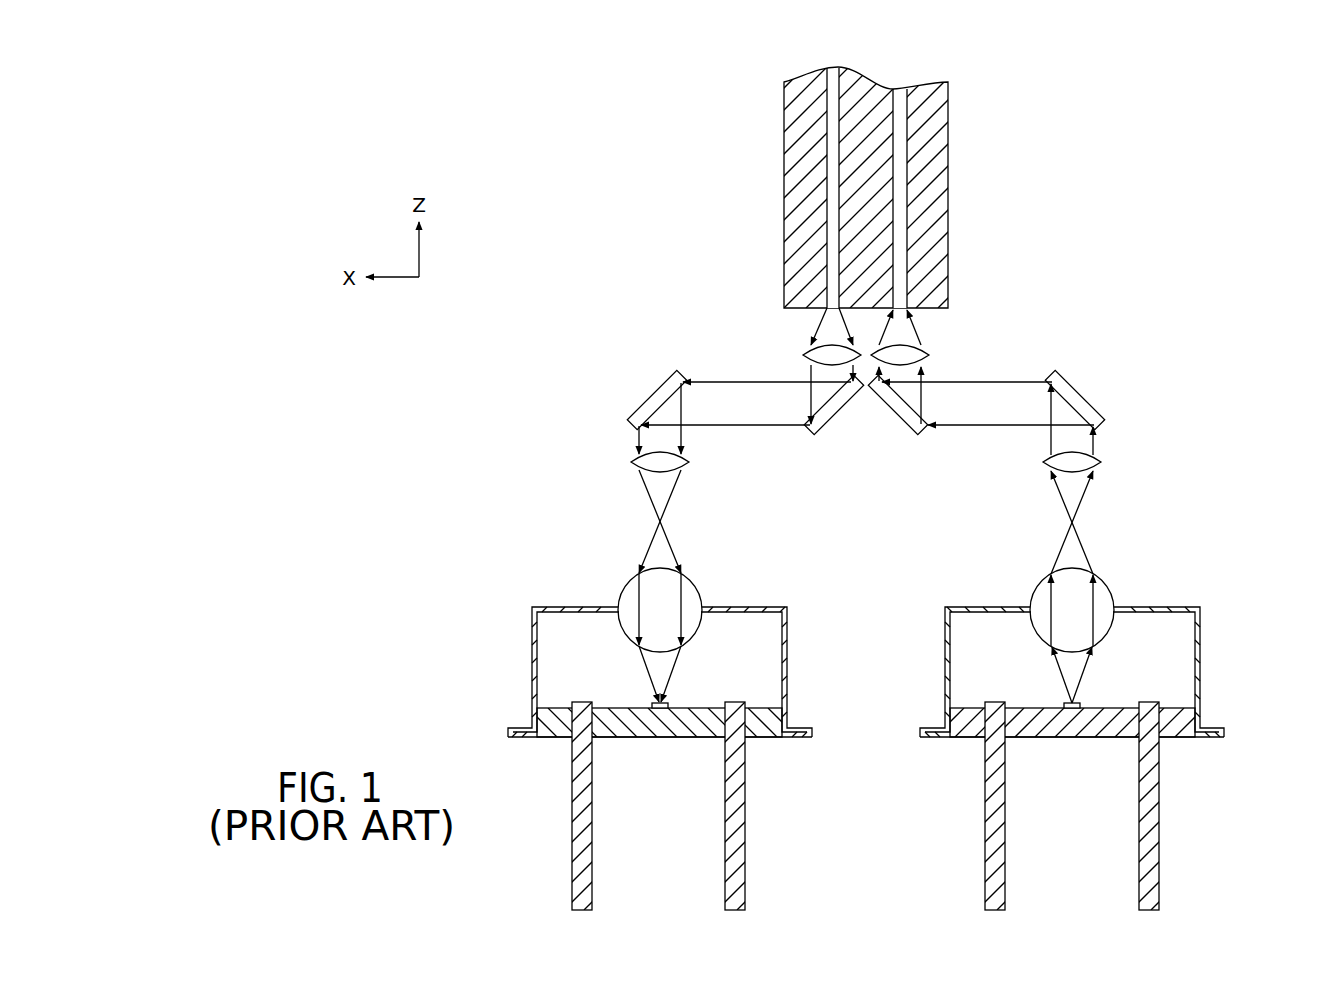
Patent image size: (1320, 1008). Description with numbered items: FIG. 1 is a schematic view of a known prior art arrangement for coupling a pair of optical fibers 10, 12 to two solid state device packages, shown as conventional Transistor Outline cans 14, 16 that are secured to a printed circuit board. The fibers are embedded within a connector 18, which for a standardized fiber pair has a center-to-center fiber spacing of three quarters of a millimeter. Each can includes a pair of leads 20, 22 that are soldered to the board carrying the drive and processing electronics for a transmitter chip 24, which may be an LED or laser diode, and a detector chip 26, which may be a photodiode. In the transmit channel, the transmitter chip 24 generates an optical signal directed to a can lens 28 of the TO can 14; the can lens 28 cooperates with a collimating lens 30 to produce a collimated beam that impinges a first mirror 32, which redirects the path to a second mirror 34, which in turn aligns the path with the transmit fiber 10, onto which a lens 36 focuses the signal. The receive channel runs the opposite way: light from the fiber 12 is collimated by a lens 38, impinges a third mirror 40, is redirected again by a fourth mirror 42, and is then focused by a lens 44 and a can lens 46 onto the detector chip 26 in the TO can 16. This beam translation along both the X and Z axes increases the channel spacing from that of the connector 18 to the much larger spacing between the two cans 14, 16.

The transmit fiber 10 is at (900, 88).
The receive fiber 12 is at (835, 74).
The TO can 14 is at (1230, 634).
The TO can 16 is at (498, 636).
The connector 18 is at (790, 120).
The leads 20 is at (575, 870).
The leads 22 is at (987, 870).
The transmitter chip 24 is at (1064, 705).
The detector chip 26 is at (670, 703).
The can lens 28 is at (1110, 590).
The collimating lens 30 is at (1098, 462).
The first mirror 32 is at (1067, 382).
The second mirror 34 is at (907, 428).
The lens 36 is at (927, 352).
The lens 38 is at (805, 352).
The third mirror 40 is at (826, 428).
The fourth mirror 42 is at (668, 382).
The lens 44 is at (634, 462).
The can lens 46 is at (622, 590).